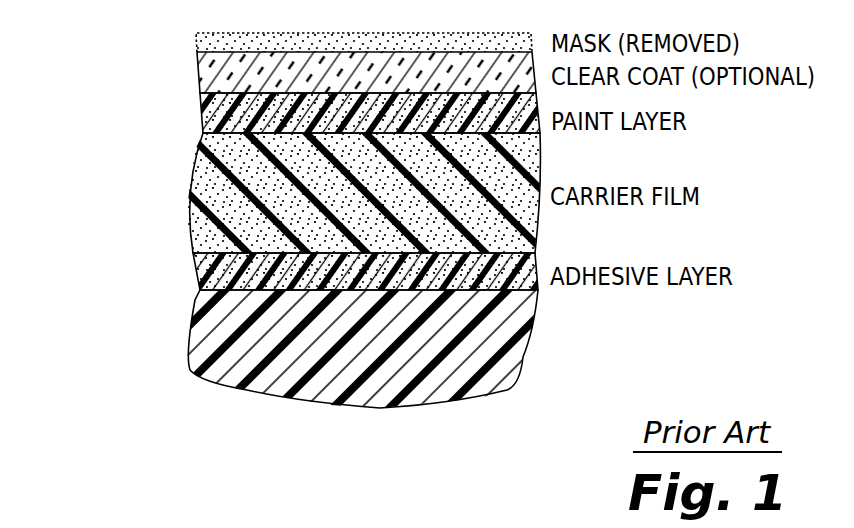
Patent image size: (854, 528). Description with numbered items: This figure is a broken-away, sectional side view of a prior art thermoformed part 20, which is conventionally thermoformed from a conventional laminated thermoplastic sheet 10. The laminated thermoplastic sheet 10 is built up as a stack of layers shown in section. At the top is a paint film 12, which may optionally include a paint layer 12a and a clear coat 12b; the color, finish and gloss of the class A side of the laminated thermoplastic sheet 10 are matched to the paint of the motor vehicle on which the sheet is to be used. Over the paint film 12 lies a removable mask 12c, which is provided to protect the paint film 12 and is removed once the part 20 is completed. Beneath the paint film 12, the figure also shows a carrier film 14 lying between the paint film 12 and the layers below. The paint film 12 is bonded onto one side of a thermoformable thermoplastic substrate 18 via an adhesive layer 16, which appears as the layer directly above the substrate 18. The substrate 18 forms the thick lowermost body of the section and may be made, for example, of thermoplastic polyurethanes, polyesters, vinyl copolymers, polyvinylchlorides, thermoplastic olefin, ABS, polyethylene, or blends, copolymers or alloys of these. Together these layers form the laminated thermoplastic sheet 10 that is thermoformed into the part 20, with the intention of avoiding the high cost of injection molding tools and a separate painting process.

The laminated thermoplastic sheet 10 is at (286, 219).
The paint film 12 is at (292, 81).
The paint layer 12a is at (200, 113).
The clear coat 12b is at (197, 72).
The removable mask 12c is at (196, 36).
The carrier film 14 is at (188, 215).
The adhesive layer 16 is at (196, 268).
The thermoformable thermoplastic substrate 18 is at (188, 346).
The part 20 is at (286, 160).